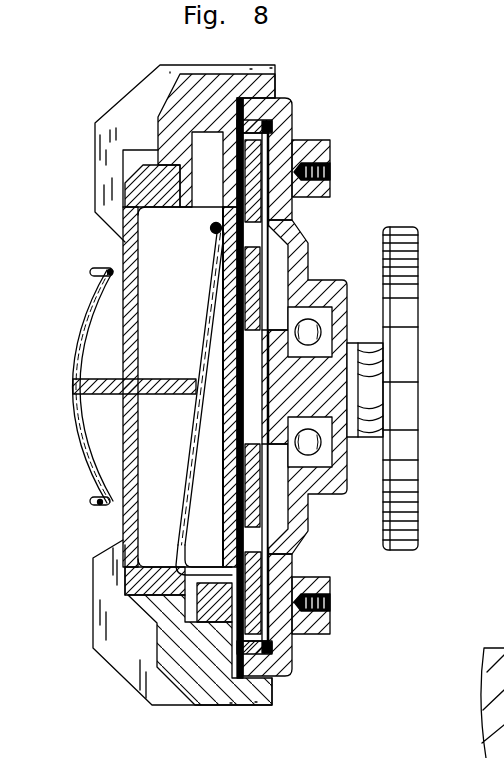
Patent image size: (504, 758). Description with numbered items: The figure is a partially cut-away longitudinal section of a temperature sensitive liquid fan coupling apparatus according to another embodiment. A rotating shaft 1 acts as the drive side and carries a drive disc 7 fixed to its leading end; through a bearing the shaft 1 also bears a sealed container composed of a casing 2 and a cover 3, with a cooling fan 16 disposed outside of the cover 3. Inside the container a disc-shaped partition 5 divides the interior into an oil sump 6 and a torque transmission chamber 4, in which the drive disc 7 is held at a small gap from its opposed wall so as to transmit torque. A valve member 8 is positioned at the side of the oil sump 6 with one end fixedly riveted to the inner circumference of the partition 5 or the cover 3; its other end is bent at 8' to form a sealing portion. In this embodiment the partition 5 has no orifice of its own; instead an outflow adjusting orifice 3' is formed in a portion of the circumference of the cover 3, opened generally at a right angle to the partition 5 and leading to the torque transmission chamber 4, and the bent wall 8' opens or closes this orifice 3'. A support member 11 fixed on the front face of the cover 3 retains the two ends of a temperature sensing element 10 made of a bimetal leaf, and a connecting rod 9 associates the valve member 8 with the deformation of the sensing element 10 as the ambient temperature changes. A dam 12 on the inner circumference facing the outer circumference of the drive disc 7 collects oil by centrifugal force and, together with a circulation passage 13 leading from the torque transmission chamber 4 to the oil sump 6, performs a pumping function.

The rotating shaft 1 is at (350, 392).
The casing 2 is at (309, 243).
The cover 3 is at (108, 232).
The outflow adjusting orifice 3' is at (122, 583).
The torque transmission chamber 4 is at (270, 213).
The partition 5 is at (218, 275).
The oil sump 6 is at (150, 327).
The drive disc 7 is at (292, 150).
The valve member 8 is at (190, 384).
The bent wall 8' is at (204, 542).
The connecting rod 9 is at (75, 383).
The temperature sensing element 10 is at (72, 412).
The support member 11 is at (108, 483).
The dam 12 is at (290, 130).
The circulation passage 13 is at (157, 152).
The cooling fan 16 is at (130, 107).